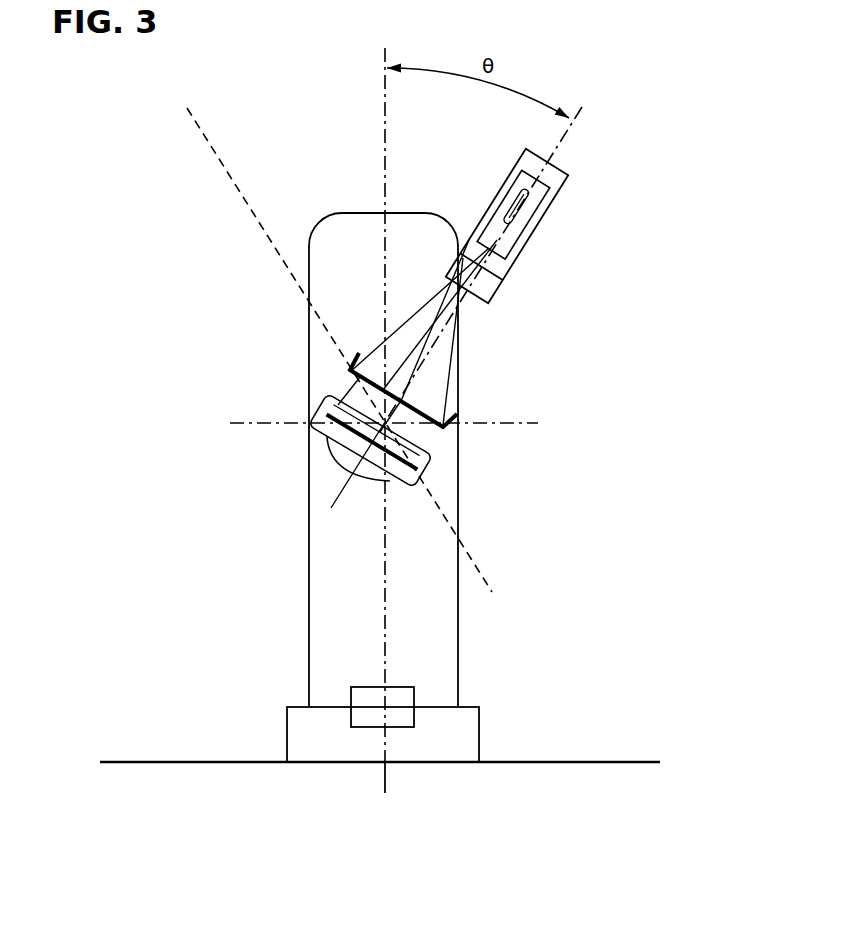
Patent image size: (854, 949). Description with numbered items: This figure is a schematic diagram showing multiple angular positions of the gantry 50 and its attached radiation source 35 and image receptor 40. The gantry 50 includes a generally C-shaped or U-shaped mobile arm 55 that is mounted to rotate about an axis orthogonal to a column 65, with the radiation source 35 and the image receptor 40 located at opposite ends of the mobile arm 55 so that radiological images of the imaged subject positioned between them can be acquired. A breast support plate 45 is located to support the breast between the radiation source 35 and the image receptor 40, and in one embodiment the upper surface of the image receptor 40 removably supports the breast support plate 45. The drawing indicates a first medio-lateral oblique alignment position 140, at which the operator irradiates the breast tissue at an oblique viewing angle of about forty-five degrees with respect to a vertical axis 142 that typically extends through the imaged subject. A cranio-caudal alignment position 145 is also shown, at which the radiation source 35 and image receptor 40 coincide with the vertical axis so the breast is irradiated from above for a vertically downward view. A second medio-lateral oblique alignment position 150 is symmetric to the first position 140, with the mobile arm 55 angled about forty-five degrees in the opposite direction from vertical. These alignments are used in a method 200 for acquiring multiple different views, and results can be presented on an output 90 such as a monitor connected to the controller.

The cranio-caudal alignment position 145 is at (372, 104).
The first medio-lateral oblique alignment position 140 is at (582, 113).
The second medio-lateral oblique alignment position 150 is at (217, 152).
The gantry 50 is at (305, 487).
The mobile arm 55 is at (576, 185).
The radiation source 35 is at (532, 208).
The breast support plate 45 is at (328, 395).
The output 90 is at (437, 430).
The column 65 is at (328, 590).
The image receptor 40 is at (397, 484).
The method 200 is at (415, 715).
The vertical axis 142 is at (382, 775).